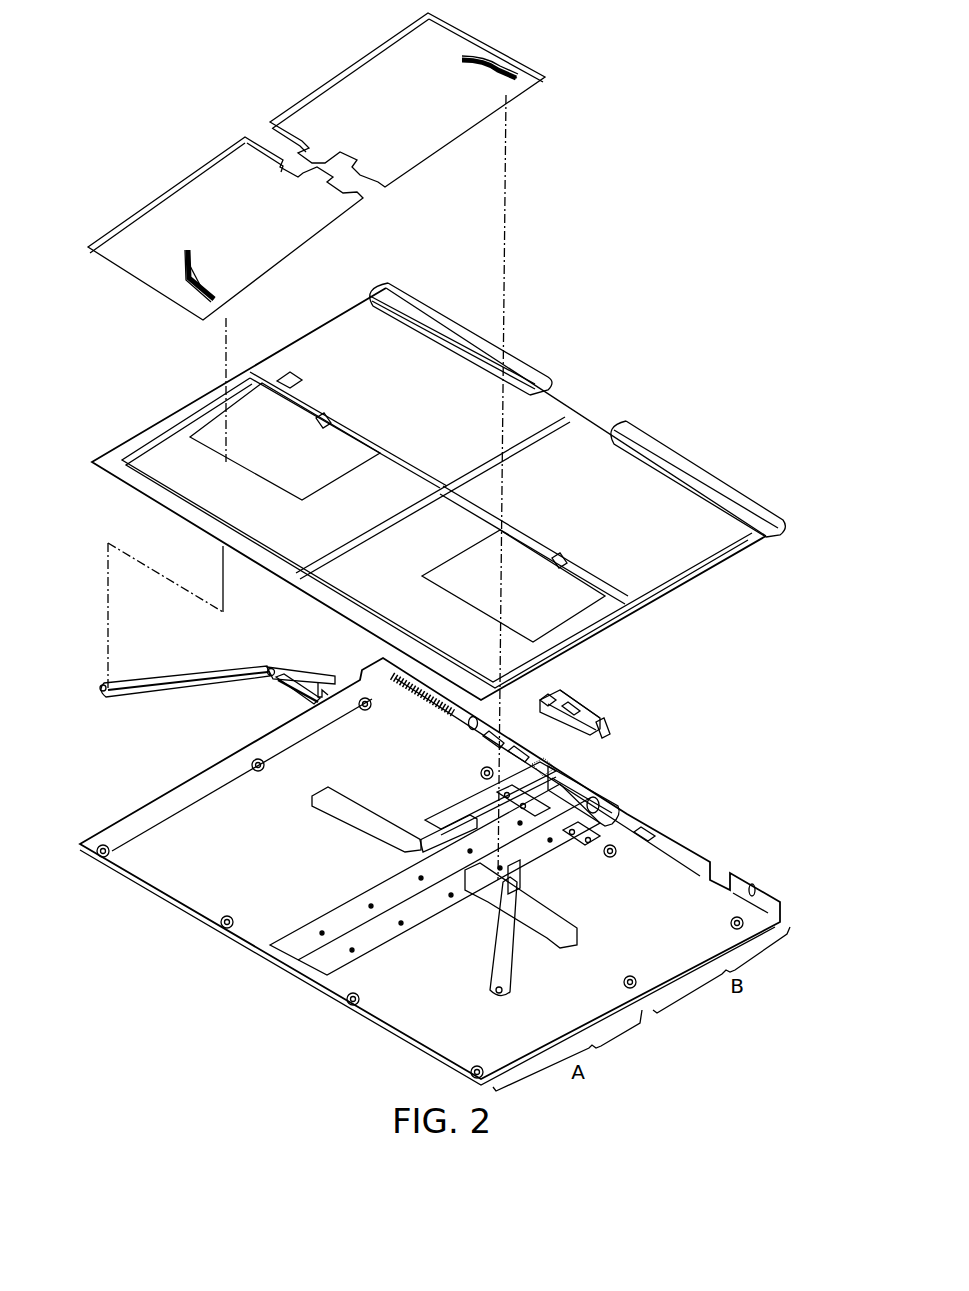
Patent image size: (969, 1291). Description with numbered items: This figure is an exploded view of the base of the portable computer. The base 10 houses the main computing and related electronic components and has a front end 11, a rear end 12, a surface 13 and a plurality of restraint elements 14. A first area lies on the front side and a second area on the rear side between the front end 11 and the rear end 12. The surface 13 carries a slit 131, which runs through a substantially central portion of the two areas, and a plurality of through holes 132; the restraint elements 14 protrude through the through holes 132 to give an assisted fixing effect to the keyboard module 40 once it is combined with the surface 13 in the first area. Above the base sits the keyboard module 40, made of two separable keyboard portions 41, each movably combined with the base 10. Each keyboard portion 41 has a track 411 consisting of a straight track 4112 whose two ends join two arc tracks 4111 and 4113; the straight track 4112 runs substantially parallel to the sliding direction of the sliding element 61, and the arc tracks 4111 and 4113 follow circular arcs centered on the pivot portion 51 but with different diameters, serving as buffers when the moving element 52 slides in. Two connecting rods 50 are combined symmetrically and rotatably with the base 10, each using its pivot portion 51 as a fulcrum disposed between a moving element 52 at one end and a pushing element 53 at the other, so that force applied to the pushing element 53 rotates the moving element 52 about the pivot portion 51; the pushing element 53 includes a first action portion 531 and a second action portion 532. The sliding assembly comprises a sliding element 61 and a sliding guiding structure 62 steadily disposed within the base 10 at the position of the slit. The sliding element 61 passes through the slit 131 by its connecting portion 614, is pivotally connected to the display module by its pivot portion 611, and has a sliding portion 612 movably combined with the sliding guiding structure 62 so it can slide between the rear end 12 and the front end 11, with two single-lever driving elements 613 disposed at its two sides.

The base 10 is at (182, 997).
The front end 11 is at (190, 915).
The rear end 12 is at (665, 832).
The surface 13 is at (672, 566).
The slit 131 is at (463, 474).
The through holes 132 is at (322, 425).
The restraint element 14 is at (310, 806).
The keyboard module 40 is at (105, 114).
The keyboard portion 41 is at (232, 180).
The track 411 is at (222, 266).
The arc track 4111 is at (186, 267).
The straight track 4112 is at (193, 288).
The arc track 4113 is at (209, 303).
The connecting rod 50 is at (116, 736).
The pivot portion 51 is at (248, 682).
The moving element 52 is at (102, 697).
The pushing element 53 is at (274, 660).
The first action portion 531 is at (298, 697).
The second action portion 532 is at (307, 673).
The sliding element 61 is at (612, 715).
The pivot portion 611 is at (582, 710).
The sliding portion 612 is at (562, 725).
The driving element 613 is at (588, 738).
The connecting portion 614 is at (548, 716).
The sliding guiding structure 62 is at (323, 945).